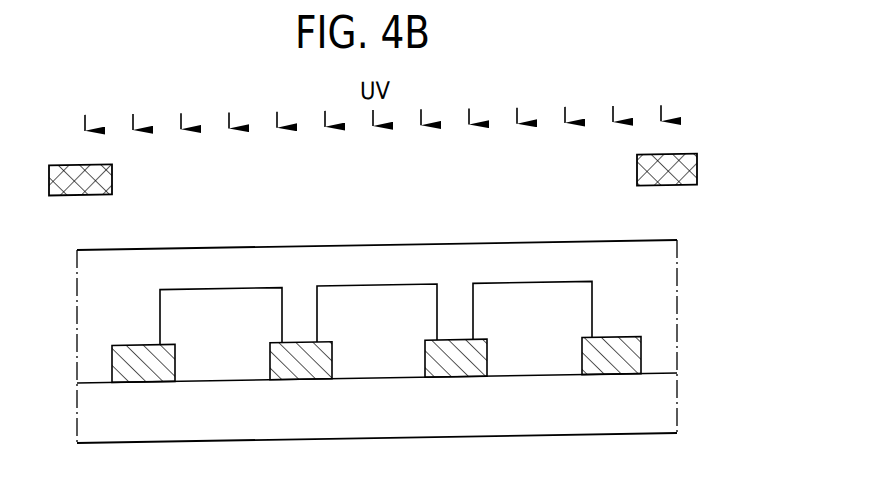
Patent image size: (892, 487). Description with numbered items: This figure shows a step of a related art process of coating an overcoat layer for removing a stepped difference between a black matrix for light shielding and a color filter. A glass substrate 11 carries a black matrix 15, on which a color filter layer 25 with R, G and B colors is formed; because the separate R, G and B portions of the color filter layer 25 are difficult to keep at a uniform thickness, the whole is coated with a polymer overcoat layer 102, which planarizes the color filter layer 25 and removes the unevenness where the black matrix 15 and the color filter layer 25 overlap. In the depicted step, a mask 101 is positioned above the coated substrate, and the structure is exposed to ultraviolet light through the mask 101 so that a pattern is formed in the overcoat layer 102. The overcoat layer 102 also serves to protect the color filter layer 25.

The glass substrate 11 is at (670, 407).
The black matrix 15 is at (468, 383).
The color filter layer 25 is at (582, 321).
The mask 101 is at (697, 178).
The overcoat layer 102 is at (669, 263).